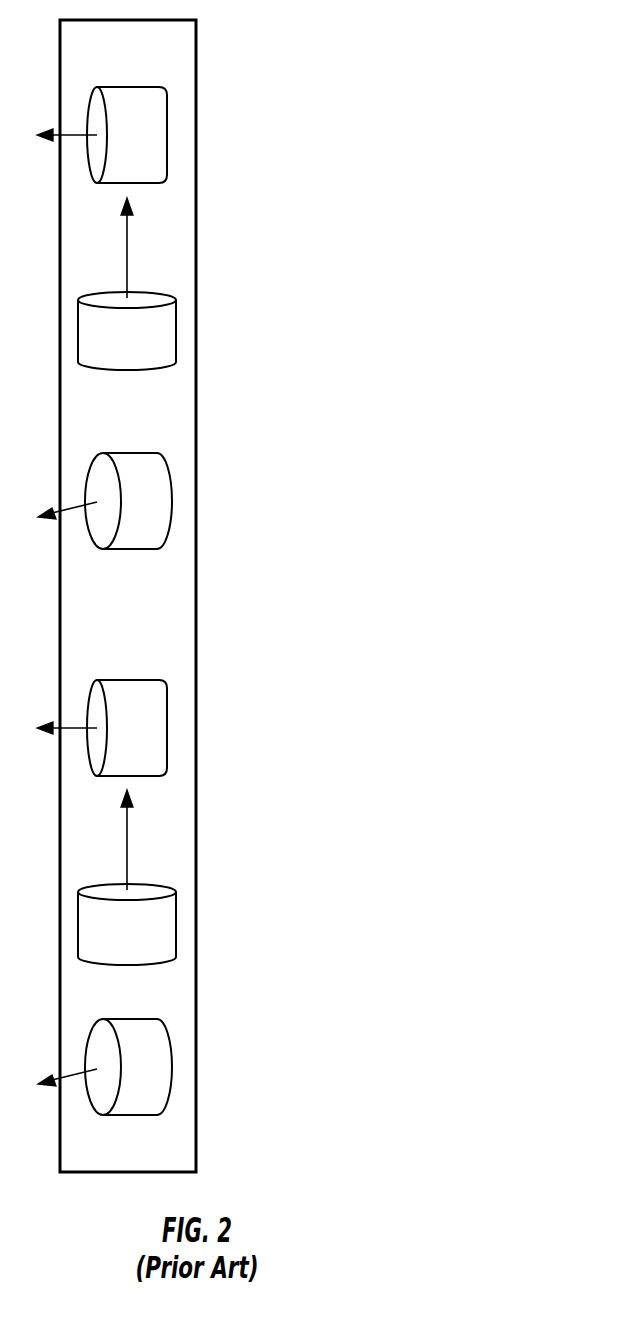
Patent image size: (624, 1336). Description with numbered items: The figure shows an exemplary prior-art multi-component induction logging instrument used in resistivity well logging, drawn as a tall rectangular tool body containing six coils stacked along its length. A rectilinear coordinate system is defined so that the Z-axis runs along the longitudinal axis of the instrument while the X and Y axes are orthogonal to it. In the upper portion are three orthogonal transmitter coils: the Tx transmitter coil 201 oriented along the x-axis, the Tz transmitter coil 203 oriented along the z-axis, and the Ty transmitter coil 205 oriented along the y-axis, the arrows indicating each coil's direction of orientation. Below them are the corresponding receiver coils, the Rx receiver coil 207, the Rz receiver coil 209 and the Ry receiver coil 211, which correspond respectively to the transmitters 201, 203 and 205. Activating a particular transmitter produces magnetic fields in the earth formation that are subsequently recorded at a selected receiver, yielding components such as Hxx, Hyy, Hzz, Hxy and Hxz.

The Tx transmitter coil 201 is at (245, 137).
The Tz transmitter coil 203 is at (245, 338).
The Ty transmitter coil 205 is at (245, 503).
The Rx receiver coil 207 is at (245, 730).
The Rz receiver coil 209 is at (245, 925).
The Ry receiver coil 211 is at (245, 1068).